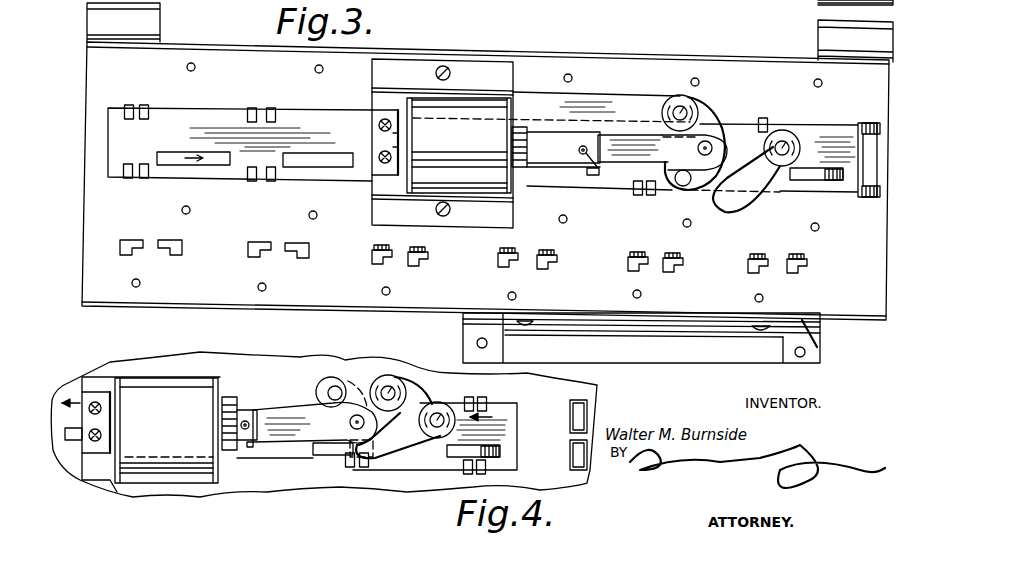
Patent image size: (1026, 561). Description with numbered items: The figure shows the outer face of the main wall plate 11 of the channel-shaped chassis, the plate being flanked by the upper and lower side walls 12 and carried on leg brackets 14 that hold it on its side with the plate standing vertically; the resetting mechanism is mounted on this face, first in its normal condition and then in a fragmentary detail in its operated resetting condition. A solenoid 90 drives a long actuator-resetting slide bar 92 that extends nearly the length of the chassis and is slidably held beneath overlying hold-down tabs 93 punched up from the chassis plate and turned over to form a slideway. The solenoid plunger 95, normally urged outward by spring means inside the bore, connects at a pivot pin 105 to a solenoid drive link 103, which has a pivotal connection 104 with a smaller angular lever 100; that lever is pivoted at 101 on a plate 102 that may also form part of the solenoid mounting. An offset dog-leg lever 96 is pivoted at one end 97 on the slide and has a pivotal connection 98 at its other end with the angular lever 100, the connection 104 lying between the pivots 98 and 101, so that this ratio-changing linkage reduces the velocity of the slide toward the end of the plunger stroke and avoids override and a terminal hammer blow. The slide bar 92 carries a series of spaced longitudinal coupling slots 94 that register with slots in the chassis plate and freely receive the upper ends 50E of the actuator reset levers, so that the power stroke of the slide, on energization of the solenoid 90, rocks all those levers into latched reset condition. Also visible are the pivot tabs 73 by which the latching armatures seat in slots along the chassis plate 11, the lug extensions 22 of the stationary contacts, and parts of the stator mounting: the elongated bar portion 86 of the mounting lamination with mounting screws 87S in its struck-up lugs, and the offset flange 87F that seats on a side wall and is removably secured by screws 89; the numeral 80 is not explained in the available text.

In FIG. 3, the main wall plate 11 is at (262, 81).
In FIG. 4, the main wall plate 11 is at (270, 362).
In FIG. 3, the side walls 12 is at (236, 27).
In FIG. 3, the leg brackets 14 is at (148, 25).
In FIG. 3, the lug extensions 22 is at (646, 7).
In FIG. 3, the ends of resetting levers 50E is at (833, 181).
In FIG. 4, the ends of resetting levers 50E is at (501, 451).
In FIG. 3, the pivot tabs 73 is at (548, 251).
In FIG. 3, the guide rail 80 is at (744, 357).
In FIG. 3, the elongated bar portion 86 is at (822, 331).
In FIG. 3, the offset mounting flange 87F is at (820, 350).
In FIG. 3, the mounting screws 87S is at (477, 343).
In FIG. 3, the screws 89 is at (525, 326).
In FIG. 3, the solenoid 90 is at (470, 151).
In FIG. 4, the solenoid 90 is at (160, 436).
In FIG. 3, the resetting slide bar 92 is at (358, 142).
In FIG. 4, the resetting slide bar 92 is at (514, 411).
In FIG. 4, the hold-down tabs 93 is at (348, 460).
In FIG. 3, the coupling slots 94 is at (195, 157).
In FIG. 4, the coupling slots 94 is at (457, 459).
In FIG. 3, the plunger 95 is at (562, 152).
In FIG. 4, the plunger 95 is at (244, 447).
In FIG. 3, the dog-leg lever 96 is at (746, 179).
In FIG. 4, the dog-leg lever 96 is at (395, 441).
In FIG. 3, the pivot 97 is at (768, 150).
In FIG. 4, the pivot 97 is at (441, 411).
In FIG. 3, the pivotal connection 98 is at (681, 187).
In FIG. 4, the pivotal connection 98 is at (322, 382).
In FIG. 3, the smaller angular lever 100 is at (702, 122).
In FIG. 4, the smaller angular lever 100 is at (402, 403).
In FIG. 3, the pivot 101 is at (680, 100).
In FIG. 3, the plate 102 is at (606, 101).
In FIG. 3, the solenoid drive link 103 is at (640, 146).
In FIG. 4, the solenoid drive link 103 is at (279, 436).
In FIG. 3, the pivotal connection 104 is at (709, 148).
In FIG. 4, the pivotal connection 104 is at (345, 419).
In FIG. 3, the pivot pin 105 is at (608, 170).